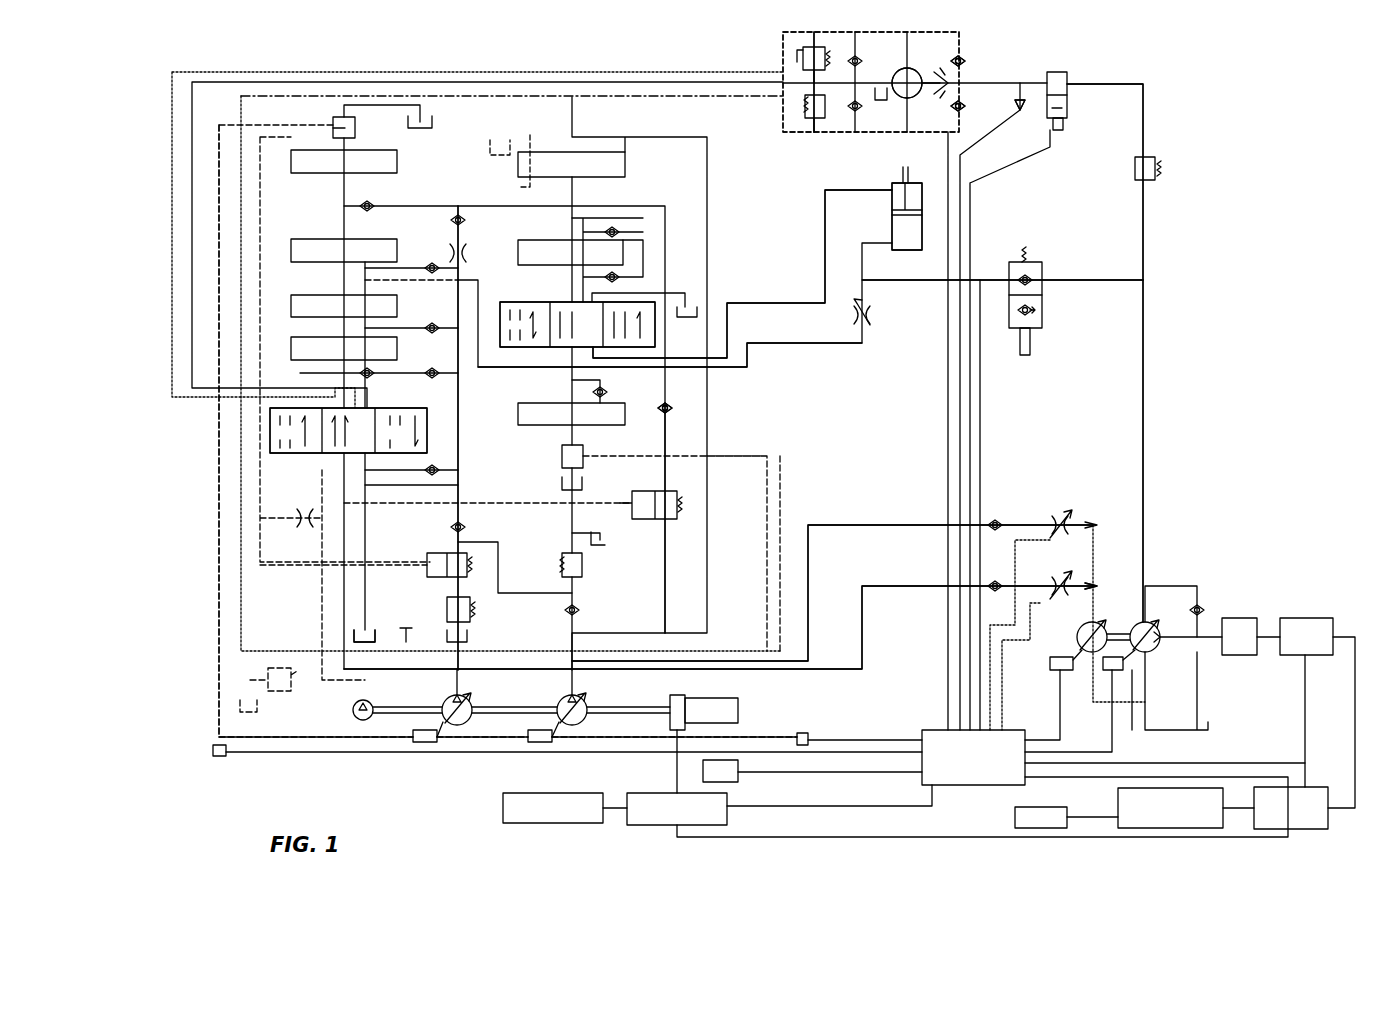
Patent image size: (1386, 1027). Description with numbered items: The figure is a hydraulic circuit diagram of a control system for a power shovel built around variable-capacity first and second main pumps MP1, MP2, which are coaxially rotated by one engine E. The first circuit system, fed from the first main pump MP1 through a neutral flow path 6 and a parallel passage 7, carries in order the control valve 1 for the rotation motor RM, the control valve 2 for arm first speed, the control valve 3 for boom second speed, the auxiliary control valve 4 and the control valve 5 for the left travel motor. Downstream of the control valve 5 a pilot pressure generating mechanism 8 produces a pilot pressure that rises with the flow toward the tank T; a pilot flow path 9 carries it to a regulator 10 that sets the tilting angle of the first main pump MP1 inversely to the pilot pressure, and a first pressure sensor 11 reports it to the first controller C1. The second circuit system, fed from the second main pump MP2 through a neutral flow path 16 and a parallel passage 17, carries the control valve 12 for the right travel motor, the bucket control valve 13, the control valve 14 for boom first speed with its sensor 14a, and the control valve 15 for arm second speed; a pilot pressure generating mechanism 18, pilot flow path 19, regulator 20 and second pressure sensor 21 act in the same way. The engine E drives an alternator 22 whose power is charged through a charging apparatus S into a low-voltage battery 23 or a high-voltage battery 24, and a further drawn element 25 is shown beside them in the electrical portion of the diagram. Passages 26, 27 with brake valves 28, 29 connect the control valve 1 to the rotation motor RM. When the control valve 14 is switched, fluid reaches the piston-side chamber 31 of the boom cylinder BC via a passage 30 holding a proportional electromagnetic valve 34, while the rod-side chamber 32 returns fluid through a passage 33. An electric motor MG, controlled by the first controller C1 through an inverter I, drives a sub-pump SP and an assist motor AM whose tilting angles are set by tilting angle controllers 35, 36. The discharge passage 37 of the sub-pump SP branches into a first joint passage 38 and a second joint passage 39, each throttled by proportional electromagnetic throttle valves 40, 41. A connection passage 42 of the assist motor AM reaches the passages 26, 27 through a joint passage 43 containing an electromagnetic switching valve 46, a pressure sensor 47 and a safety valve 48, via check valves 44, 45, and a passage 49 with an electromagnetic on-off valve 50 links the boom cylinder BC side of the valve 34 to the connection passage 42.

The control valve 1 is at (270, 453).
The control valve for arm first speed 2 is at (291, 337).
The control valve for boom second speed 3 is at (291, 295).
The auxiliary control valve 4 is at (291, 239).
The control valve for left travel motor 5 is at (291, 150).
The neutral flow path 6 is at (333, 128).
The parallel passage 7 is at (460, 403).
The pilot pressure generating mechanism 8 is at (335, 117).
The pilot flow path 9 is at (219, 512).
The regulator 10 is at (427, 743).
The first pressure sensor 11 is at (220, 757).
The control valve 12 is at (572, 137).
The bucket control valve 13 is at (623, 241).
The control valve for boom first speed 14 is at (655, 347).
The sensor 14a is at (738, 780).
The control valve for arm second speed 15 is at (666, 414).
The neutral flow path 16 is at (582, 426).
The parallel passage 17 is at (643, 270).
The pilot pressure generating mechanism 18 is at (583, 460).
The pilot flow path 19 is at (782, 487).
The regulator 20 is at (528, 737).
The second pressure sensor 21 is at (808, 735).
The alternator 22 is at (670, 700).
The low-voltage battery 23 is at (505, 793).
The high-voltage battery 24 is at (1300, 787).
The sensor 25 is at (1015, 810).
The passage 26 is at (878, 40).
The passage 27 is at (830, 135).
The brake valve 28 is at (803, 60).
The brake valve 29 is at (805, 112).
The passage 30 is at (790, 345).
The piston-side chamber 31 is at (906, 255).
The rod-side chamber 32 is at (892, 205).
The passage 33 is at (825, 253).
The proportional electromagnetic valve 34 is at (855, 318).
The tilting angle controller 35 is at (1050, 665).
The tilting angle controller 36 is at (1123, 665).
The discharge passage 37 is at (1097, 592).
The first joint passage 38 is at (872, 588).
The second joint passage 39 is at (875, 525).
The first proportional electromagnetic throttle valve 40 is at (1058, 584).
The second proportional electromagnetic throttle valve 41 is at (1055, 522).
The connection passage 42 is at (1143, 340).
The joint passage 43 is at (1143, 115).
The check valve 44 is at (965, 60).
The check valve 45 is at (958, 110).
The electromagnetic switching valve 46 is at (1067, 76).
The pressure sensor 47 is at (1025, 100).
The safety valve 48 is at (1155, 180).
The passage 49 is at (975, 285).
The electromagnetic on-off valve 50 is at (1042, 328).
The first main pump MP1 is at (445, 700).
The second main pump MP2 is at (560, 700).
The sub-pump SP is at (1080, 632).
The assist motor AM is at (1150, 620).
The electric motor MG is at (1240, 618).
The inverter I is at (1305, 618).
The first controller C1 is at (922, 730).
The engine E is at (738, 700).
The charging apparatus S is at (632, 793).
The tank T is at (378, 640).
The rotation motor RM is at (885, 132).
The boom cylinder BC is at (922, 245).